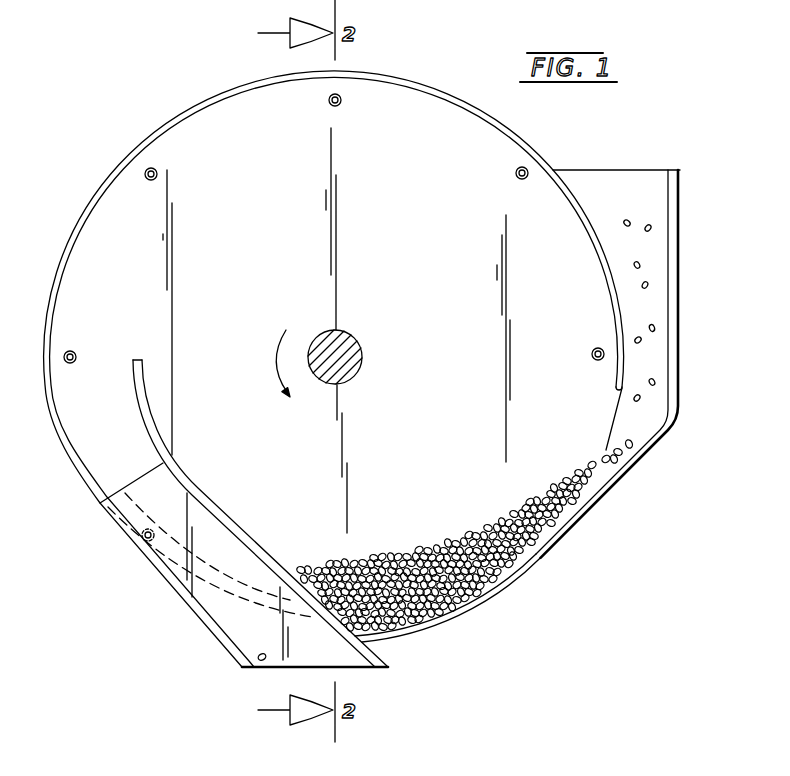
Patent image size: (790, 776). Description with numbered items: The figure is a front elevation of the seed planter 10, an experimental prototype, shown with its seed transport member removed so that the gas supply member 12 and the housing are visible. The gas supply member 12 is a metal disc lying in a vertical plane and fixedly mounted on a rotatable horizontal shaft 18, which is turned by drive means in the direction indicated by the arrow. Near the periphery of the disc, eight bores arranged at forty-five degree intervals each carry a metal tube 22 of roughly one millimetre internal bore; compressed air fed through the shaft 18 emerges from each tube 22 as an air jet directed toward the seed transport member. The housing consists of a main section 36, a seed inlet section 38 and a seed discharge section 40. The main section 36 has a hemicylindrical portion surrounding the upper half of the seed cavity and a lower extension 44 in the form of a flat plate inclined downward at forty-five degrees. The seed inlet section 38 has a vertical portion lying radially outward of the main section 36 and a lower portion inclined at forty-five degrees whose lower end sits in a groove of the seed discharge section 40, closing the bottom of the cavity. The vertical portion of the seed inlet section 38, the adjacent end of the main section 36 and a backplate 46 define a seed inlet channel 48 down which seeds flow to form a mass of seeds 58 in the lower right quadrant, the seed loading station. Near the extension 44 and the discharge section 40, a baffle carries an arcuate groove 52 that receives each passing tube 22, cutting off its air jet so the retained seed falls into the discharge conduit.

The seed planter 10 is at (98, 173).
The gas supply member 12 is at (435, 291).
The rotatable horizontal shaft 18 is at (358, 357).
The metal tube 22 is at (340, 106).
The main section of the housing 36 is at (229, 96).
The seed inlet section 38 is at (680, 399).
The seed discharge section 40 is at (222, 519).
The lower extension 44 is at (203, 622).
The backplate 46 is at (614, 177).
The seed inlet channel 48 is at (630, 211).
The arcuate groove 52 is at (160, 553).
The mass of seeds 58 is at (489, 581).